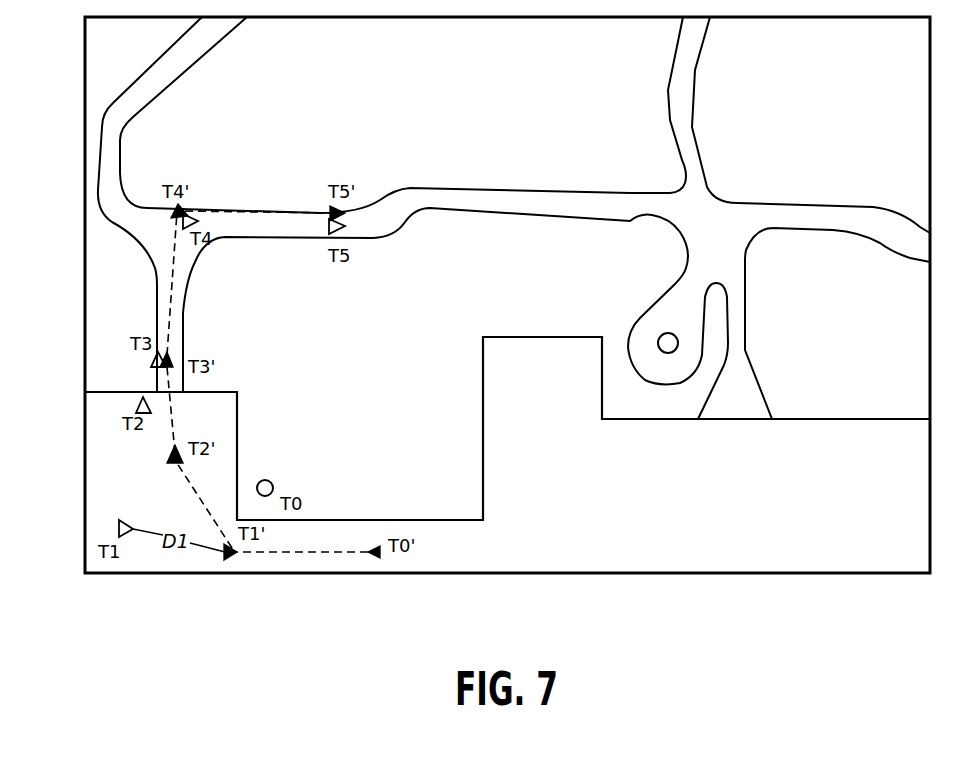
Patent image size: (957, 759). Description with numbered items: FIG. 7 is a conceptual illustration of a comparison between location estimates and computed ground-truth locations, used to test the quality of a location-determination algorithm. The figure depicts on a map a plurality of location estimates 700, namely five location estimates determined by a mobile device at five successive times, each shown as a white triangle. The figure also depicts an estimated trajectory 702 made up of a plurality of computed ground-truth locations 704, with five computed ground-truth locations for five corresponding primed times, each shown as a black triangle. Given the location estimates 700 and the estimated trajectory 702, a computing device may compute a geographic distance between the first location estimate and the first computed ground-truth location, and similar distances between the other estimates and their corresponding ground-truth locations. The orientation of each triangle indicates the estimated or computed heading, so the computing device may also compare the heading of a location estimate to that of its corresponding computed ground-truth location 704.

The location estimates 700 is at (108, 521).
The estimated trajectory 702 is at (166, 289).
The computed ground-truth locations 704 is at (350, 205).